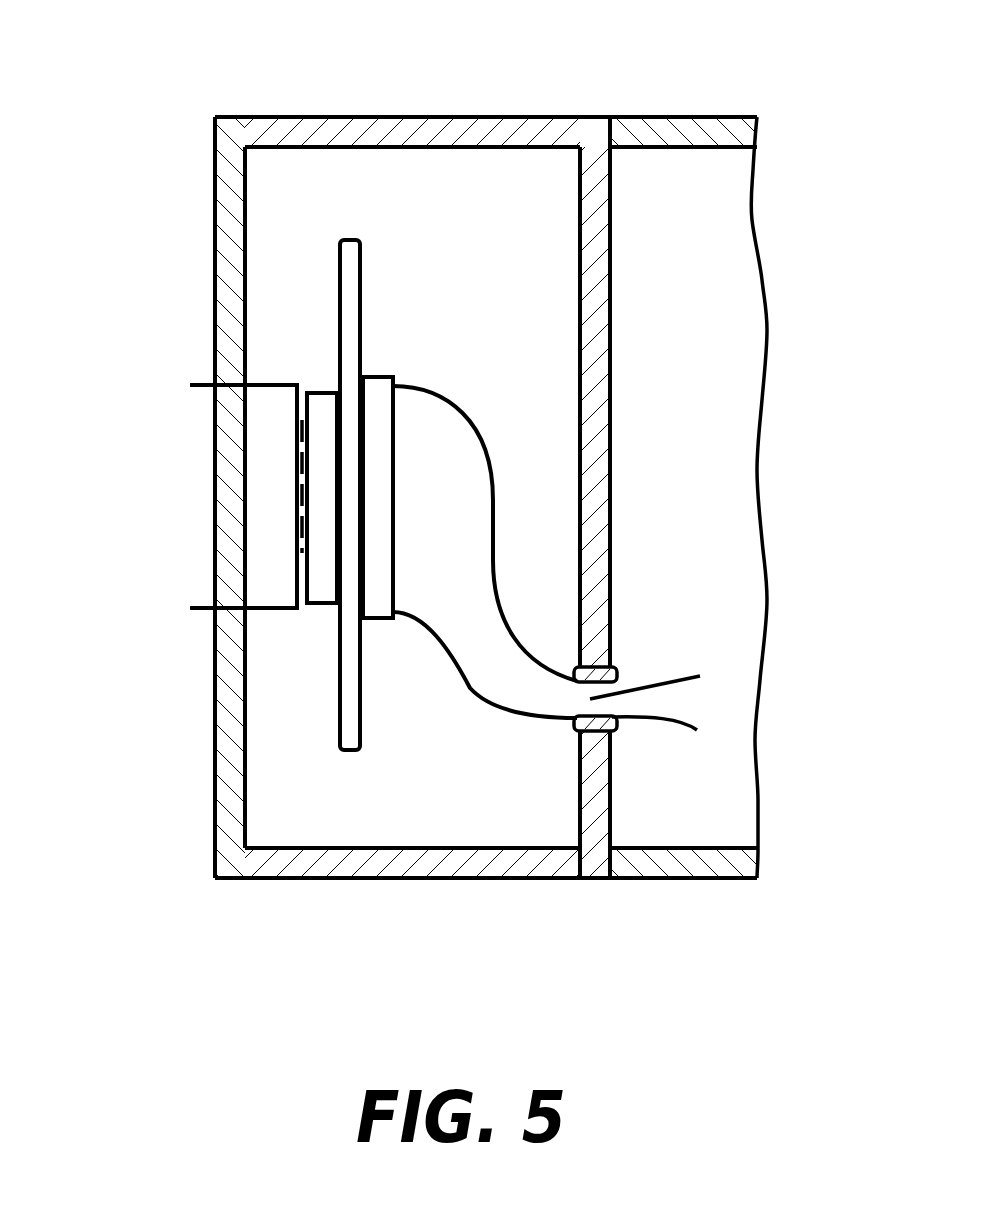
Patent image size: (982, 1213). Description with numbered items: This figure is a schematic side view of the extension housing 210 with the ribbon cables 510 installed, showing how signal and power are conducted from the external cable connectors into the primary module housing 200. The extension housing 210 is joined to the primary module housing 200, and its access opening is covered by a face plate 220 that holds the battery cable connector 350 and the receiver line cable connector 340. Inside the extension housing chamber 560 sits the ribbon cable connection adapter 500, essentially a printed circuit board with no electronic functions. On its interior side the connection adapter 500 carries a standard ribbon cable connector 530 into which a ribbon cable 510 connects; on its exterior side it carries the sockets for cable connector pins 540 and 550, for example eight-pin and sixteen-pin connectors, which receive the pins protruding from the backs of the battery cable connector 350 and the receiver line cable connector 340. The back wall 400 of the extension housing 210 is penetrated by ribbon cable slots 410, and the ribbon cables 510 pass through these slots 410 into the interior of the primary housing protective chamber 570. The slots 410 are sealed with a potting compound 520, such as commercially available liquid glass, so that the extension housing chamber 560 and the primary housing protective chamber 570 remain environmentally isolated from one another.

The primary module housing 200 is at (663, 878).
The extension housing 210 is at (350, 878).
The face plate 220 is at (215, 813).
The receiver line cable connector 340 is at (270, 612).
The battery cable connector 350 is at (194, 561).
The back wall 400 is at (565, 797).
The ribbon cable slot 410 is at (608, 700).
The ribbon cable connection adapter 500 is at (353, 240).
The ribbon cable 510 is at (478, 485).
The potting compound 520 is at (617, 722).
The ribbon cable connector 530 is at (387, 378).
The socket for cable connector pins 540 is at (325, 392).
The socket for cable connector pins 550 is at (217, 430).
The extension housing chamber 560 is at (287, 197).
The primary housing protective chamber 570 is at (677, 200).